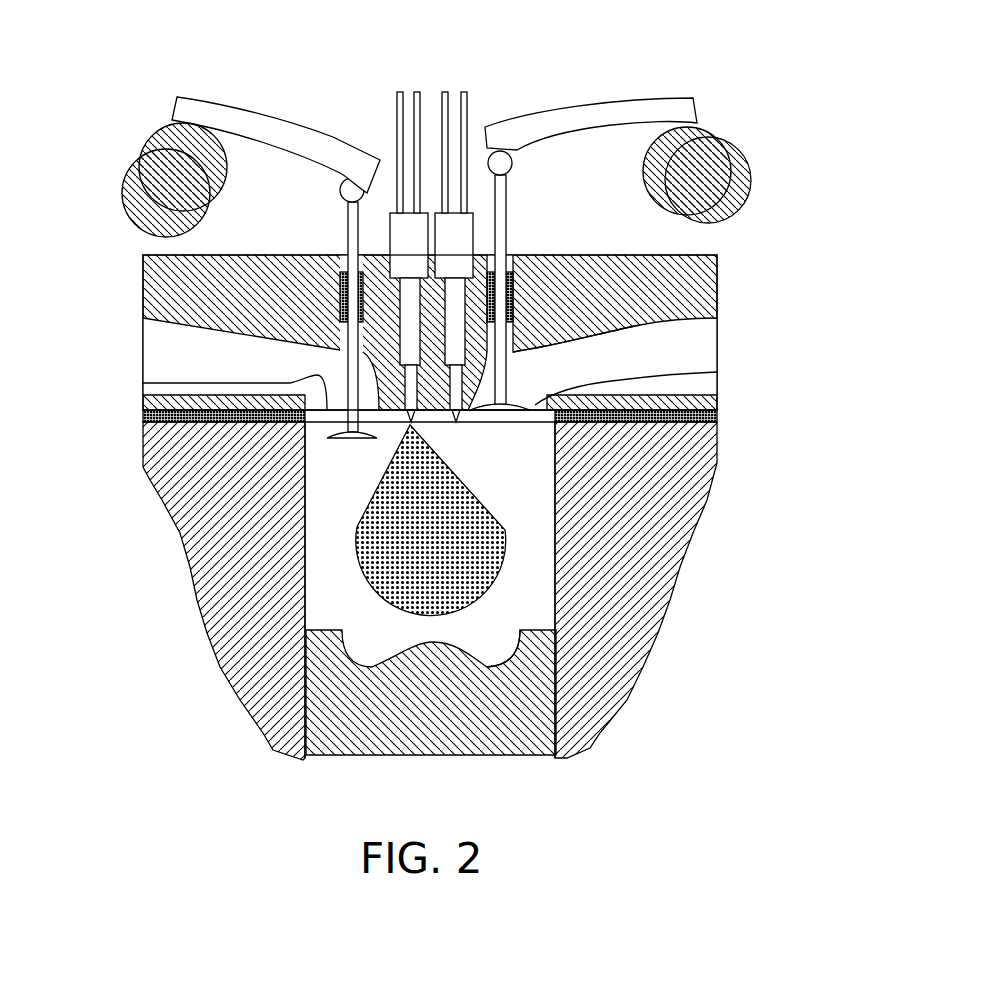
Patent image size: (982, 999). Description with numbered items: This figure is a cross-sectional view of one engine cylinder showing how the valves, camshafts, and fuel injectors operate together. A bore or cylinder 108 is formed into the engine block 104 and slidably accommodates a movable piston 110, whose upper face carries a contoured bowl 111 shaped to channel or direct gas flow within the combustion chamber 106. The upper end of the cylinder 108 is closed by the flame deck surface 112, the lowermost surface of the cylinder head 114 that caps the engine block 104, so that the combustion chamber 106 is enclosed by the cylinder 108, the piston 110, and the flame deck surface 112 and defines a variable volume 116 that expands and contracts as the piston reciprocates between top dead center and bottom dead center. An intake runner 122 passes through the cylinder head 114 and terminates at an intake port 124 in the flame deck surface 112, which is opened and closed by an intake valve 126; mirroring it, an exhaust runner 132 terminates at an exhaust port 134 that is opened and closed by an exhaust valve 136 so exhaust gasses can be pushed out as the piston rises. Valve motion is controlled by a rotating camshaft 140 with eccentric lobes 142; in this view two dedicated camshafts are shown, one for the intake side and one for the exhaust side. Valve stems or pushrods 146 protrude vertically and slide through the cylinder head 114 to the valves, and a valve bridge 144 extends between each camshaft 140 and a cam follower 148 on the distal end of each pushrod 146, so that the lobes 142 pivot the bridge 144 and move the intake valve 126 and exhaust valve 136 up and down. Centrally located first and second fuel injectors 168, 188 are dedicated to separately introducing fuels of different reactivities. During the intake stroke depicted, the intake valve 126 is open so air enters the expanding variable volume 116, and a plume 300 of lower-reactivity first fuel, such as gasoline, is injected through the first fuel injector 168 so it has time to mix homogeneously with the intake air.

The engine block 104 is at (177, 493).
The combustion chamber 106 is at (175, 665).
The cylinder 108 is at (552, 532).
The piston 110 is at (487, 757).
The contoured bowl 111 is at (496, 643).
The flame deck surface 112 is at (550, 424).
The cylinder head 114 is at (697, 290).
The variable volume 116 is at (368, 616).
The intake runner 122 is at (150, 332).
The intake port 124 is at (290, 383).
The intake valve 126 is at (353, 438).
The exhaust runner 132 is at (698, 350).
The exhaust port 134 is at (655, 376).
The exhaust valve 136 is at (698, 350).
The camshaft 140 is at (437, 168).
The eccentric lobe 142 is at (150, 135).
The valve bridge 144 is at (260, 120).
The valve pushrod 146 is at (347, 238).
The cam follower 148 is at (363, 190).
The first fuel injector 168 is at (407, 243).
The second fuel injector 188 is at (453, 232).
The plume 300 is at (420, 535).